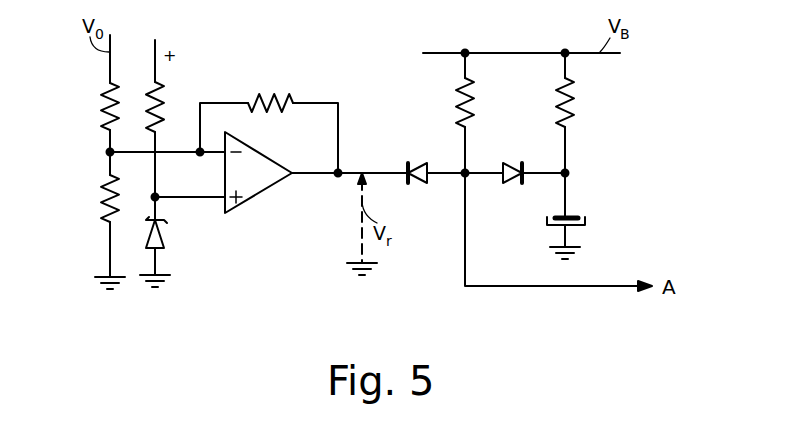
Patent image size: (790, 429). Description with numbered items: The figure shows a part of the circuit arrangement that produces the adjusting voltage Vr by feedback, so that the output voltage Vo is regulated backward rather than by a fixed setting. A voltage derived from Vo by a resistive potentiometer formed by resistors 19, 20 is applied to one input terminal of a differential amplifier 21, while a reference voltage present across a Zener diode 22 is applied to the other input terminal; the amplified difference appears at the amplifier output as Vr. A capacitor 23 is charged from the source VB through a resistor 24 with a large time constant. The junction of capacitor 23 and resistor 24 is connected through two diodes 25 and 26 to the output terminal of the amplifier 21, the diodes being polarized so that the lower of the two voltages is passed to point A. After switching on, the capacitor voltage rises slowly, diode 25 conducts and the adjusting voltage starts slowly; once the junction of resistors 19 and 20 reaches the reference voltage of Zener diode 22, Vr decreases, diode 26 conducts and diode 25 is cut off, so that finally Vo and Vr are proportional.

The resistor 19 is at (100, 196).
The resistor 20 is at (101, 108).
The differential amplifier 21 is at (258, 194).
The Zener diode 22 is at (165, 226).
The capacitor 23 is at (586, 222).
The resistor 24 is at (575, 97).
The diode 25 is at (515, 185).
The diode 26 is at (422, 186).